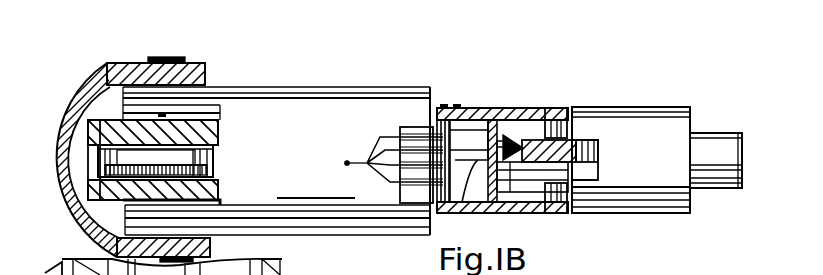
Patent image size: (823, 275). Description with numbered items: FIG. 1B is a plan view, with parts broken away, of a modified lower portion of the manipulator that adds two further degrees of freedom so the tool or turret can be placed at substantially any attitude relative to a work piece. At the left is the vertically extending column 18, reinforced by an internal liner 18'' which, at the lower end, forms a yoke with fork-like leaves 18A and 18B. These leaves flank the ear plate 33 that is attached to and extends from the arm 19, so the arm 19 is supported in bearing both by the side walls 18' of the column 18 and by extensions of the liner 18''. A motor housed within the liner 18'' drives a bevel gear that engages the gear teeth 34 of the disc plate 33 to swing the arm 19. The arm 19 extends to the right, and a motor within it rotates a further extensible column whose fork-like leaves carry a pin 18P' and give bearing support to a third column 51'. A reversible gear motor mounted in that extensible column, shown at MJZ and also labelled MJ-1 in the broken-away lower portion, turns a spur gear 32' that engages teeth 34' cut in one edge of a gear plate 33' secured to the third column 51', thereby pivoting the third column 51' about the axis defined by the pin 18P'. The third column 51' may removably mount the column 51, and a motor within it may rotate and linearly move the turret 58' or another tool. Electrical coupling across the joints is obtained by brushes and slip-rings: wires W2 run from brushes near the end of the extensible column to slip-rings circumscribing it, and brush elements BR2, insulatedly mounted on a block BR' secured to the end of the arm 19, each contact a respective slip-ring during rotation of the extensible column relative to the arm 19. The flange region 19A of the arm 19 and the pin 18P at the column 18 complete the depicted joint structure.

The column 18 is at (67, 160).
The side walls of column 18' is at (156, 52).
The internal liner 18'' is at (121, 231).
The pin 18P is at (169, 43).
The fork-like leaf 18A is at (220, 128).
The fork-like leaf 18B is at (220, 190).
The arm 19 is at (283, 95).
The lip of tubular housing 19A is at (192, 110).
The ear plate 33 is at (113, 164).
The gear teeth 34 is at (58, 169).
The wires W2 is at (385, 133).
The block BR' is at (421, 123).
The brush elements BR2 is at (438, 107).
The jack insert MJZ is at (468, 140).
The spur gear 32' is at (523, 122).
The teeth 34' is at (579, 117).
The pin 18P' is at (581, 94).
The gear plate 33' is at (556, 220).
The third column 51' is at (631, 185).
The column 51 is at (716, 137).
The turret 58' is at (768, 239).
The mating jack MJ-1 is at (280, 272).